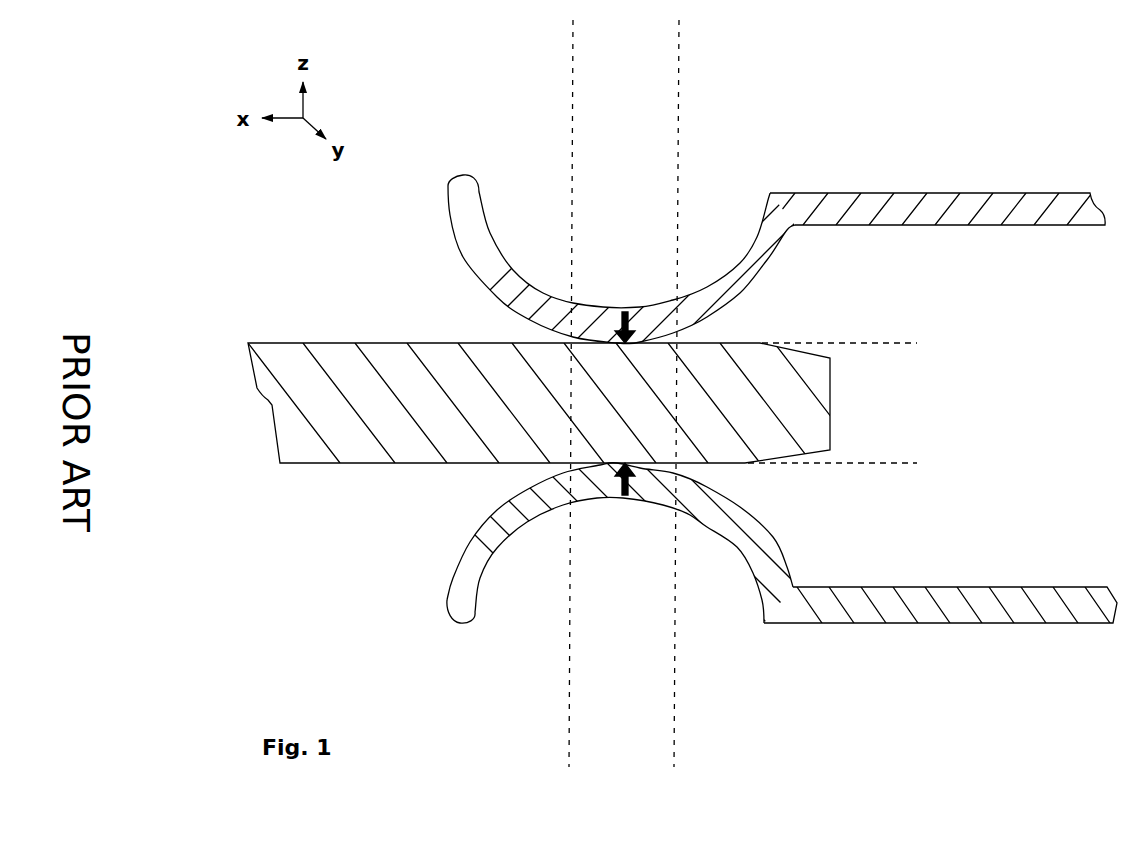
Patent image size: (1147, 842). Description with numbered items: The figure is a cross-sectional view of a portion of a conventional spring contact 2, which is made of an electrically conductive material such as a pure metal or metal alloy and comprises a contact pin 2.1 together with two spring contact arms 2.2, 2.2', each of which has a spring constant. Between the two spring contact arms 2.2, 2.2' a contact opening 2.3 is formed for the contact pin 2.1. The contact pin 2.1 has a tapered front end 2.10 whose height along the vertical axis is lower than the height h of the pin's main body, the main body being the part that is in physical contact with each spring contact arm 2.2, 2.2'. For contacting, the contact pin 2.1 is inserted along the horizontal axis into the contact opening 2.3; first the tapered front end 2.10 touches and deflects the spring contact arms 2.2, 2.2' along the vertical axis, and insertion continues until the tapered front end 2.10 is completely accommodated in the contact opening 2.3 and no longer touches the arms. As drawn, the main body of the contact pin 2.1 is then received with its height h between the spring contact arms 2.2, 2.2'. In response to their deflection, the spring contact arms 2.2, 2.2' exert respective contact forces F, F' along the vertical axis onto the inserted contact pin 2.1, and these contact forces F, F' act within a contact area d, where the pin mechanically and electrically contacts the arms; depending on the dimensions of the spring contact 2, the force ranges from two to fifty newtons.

The spring contact 2 is at (1087, 108).
The contact pin 2.1 is at (703, 383).
The tapered front end 2.10 is at (797, 397).
The contact opening 2.3 is at (886, 313).
The spring contact arm 2.2 is at (937, 166).
The spring contact arm 2.2' is at (940, 365).
The contact force F is at (643, 296).
The contact force F' is at (606, 514).
The contact area d is at (575, 45).
The height of the main body of the contact pin h is at (898, 345).